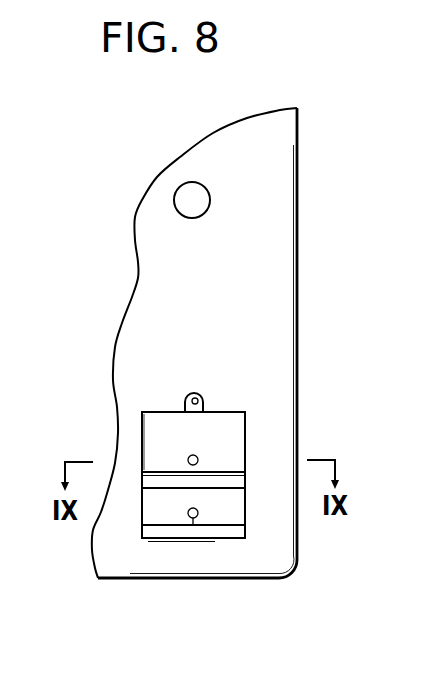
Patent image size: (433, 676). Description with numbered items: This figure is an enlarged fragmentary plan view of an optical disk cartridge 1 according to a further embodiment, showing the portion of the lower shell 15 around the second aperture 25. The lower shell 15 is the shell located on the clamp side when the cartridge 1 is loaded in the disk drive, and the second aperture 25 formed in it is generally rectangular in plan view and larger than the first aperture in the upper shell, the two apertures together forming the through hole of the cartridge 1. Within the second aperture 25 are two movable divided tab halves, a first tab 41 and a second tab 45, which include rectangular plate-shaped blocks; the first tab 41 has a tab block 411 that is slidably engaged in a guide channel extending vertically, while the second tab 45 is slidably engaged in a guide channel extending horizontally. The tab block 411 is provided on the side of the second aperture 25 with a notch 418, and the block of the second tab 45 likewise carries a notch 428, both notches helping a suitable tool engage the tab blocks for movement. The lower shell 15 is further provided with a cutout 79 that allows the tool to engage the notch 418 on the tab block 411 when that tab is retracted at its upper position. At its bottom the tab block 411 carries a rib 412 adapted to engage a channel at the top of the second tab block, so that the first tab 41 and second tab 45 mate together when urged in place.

The cartridge 1 is at (309, 158).
The lower shell 15 is at (286, 267).
The second aperture 25 is at (229, 435).
The first tab 41 is at (155, 433).
The tab block 411 is at (150, 452).
The cutout 79 is at (200, 399).
The notch 418 is at (200, 462).
The rib 412 is at (148, 483).
The second tab 45 is at (153, 513).
The notch 428 is at (193, 523).